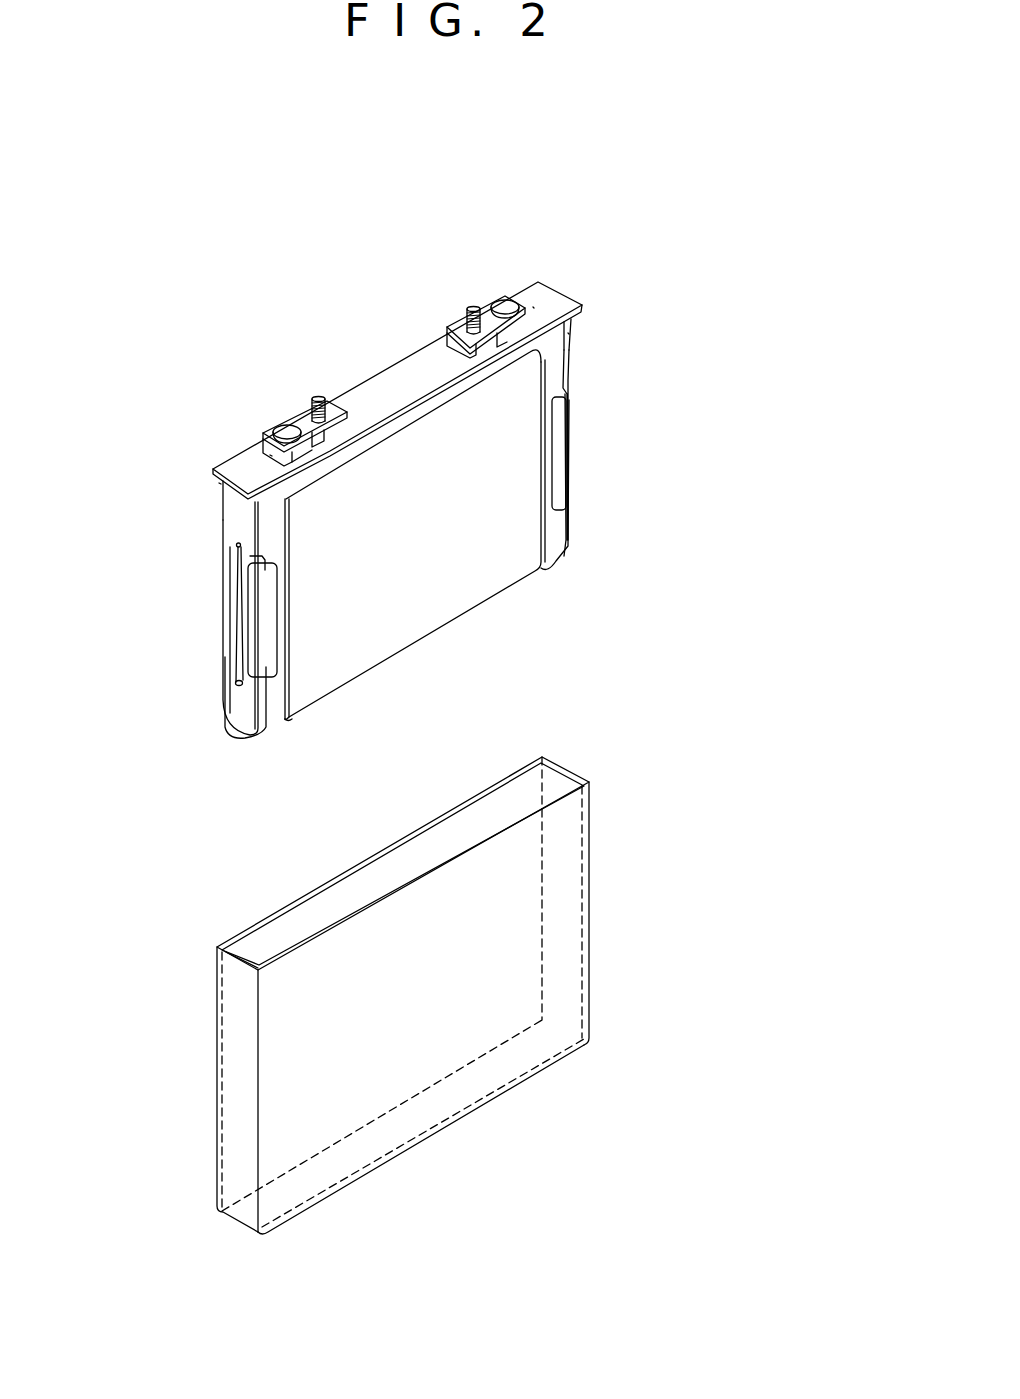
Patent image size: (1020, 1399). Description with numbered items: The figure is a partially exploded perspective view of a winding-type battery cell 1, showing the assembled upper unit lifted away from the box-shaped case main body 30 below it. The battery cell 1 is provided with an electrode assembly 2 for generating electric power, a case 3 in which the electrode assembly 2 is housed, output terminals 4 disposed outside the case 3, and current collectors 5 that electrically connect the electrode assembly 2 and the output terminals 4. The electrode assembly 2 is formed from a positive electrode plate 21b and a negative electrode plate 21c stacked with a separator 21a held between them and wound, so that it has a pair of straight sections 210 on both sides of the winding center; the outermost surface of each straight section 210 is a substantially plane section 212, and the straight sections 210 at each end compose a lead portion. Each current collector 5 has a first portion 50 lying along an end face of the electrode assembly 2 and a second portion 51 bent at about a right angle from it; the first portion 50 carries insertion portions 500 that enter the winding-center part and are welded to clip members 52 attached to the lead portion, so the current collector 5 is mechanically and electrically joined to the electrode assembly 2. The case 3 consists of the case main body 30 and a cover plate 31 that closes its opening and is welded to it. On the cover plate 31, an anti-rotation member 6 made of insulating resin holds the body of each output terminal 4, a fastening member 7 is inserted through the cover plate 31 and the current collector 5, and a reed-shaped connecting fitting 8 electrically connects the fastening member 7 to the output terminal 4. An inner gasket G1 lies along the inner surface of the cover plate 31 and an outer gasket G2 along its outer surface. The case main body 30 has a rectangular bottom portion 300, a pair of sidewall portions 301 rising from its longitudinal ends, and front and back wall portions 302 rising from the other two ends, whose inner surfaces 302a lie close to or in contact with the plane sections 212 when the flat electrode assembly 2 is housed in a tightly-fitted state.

The battery cell 1 is at (705, 394).
The electrode assembly 2 is at (700, 583).
The case 3 is at (448, 732).
The output terminal 4 is at (322, 400).
The current collector 5 is at (130, 493).
The anti-rotation member 6 is at (344, 428).
The fastening member 7 is at (288, 430).
The connecting fitting 8 is at (298, 418).
The separator 21a is at (512, 587).
The positive electrode plate 21b is at (558, 547).
The negative electrode plate 21c is at (300, 712).
The case main body 30 is at (617, 871).
The cover plate 31 is at (551, 291).
The first portion 50 is at (230, 540).
The second portion 51 is at (240, 502).
The clip member 52 is at (265, 620).
The straight section 210 is at (242, 573).
The substantially plane section 212 is at (386, 565).
The bottom portion 300 is at (494, 1068).
The sidewall portion 301 is at (590, 776).
The front and back wall portion 302 is at (258, 922).
The inner surface 302a is at (348, 907).
The insertion portion 500 is at (240, 608).
The inner gasket G1 is at (219, 483).
The outer gasket G2 is at (270, 455).